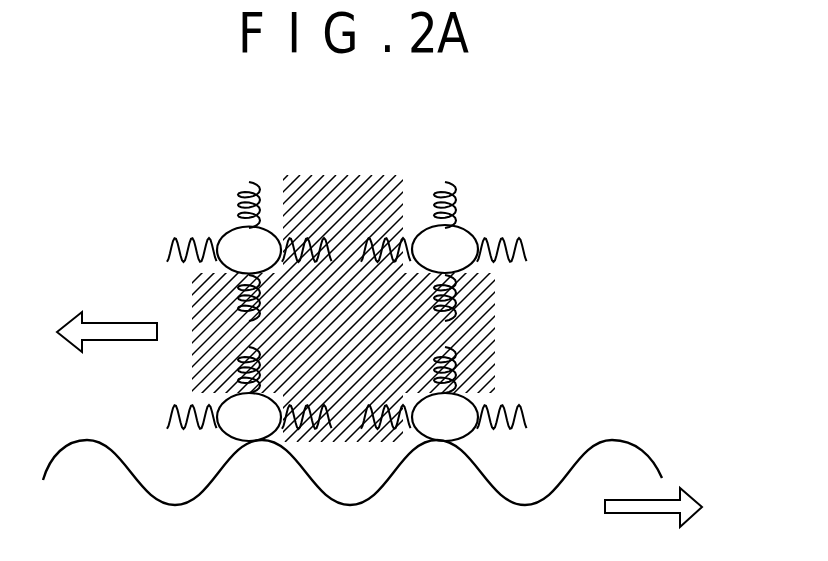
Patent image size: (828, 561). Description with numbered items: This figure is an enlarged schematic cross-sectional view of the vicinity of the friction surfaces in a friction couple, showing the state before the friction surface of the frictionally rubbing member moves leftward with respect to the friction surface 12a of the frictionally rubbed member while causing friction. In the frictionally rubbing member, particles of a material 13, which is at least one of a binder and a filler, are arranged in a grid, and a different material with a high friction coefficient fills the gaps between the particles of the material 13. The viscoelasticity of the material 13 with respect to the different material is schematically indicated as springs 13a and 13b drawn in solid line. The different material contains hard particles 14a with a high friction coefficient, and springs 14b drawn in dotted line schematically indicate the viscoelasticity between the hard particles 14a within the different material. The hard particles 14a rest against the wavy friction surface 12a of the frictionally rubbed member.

The friction surface of the frictionally rubbed member 12a is at (637, 441).
The material 13 is at (313, 190).
The spring 13a is at (458, 291).
The spring 13b is at (366, 245).
The hard particle 14a is at (465, 238).
The spring 14b is at (527, 238).